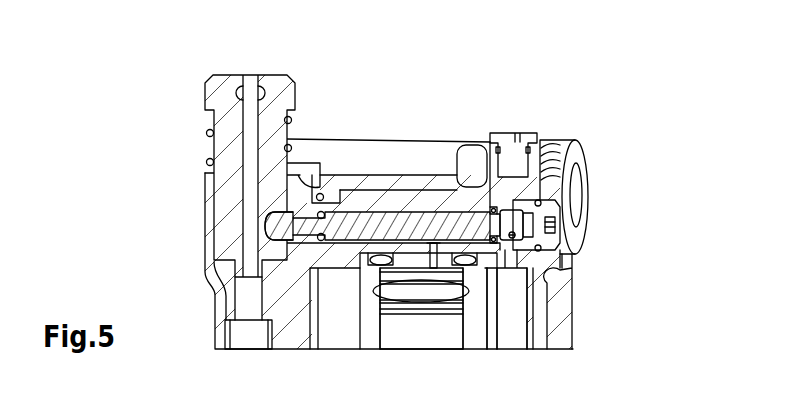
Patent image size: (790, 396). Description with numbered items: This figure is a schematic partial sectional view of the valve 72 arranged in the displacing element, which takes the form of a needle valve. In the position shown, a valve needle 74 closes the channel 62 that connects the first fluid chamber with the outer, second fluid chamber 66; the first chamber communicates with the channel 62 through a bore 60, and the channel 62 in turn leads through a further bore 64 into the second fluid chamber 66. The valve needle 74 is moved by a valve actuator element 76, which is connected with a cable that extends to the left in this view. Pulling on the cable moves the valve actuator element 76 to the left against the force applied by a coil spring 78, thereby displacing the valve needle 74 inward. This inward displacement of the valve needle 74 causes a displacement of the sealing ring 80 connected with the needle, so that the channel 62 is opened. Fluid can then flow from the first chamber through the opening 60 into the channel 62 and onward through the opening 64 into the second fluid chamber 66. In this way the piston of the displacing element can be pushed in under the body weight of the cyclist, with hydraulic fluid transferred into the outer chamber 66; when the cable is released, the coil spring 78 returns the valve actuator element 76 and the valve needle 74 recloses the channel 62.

The bore 60 is at (433, 258).
The channel 62 is at (490, 212).
The further bore 64 is at (512, 258).
The second fluid chamber 66 is at (503, 310).
The valve 72 is at (359, 195).
The valve needle 74 is at (307, 212).
The valve actuator element 76 is at (222, 93).
The coil spring 78 is at (206, 134).
The sealing ring 80 is at (494, 213).